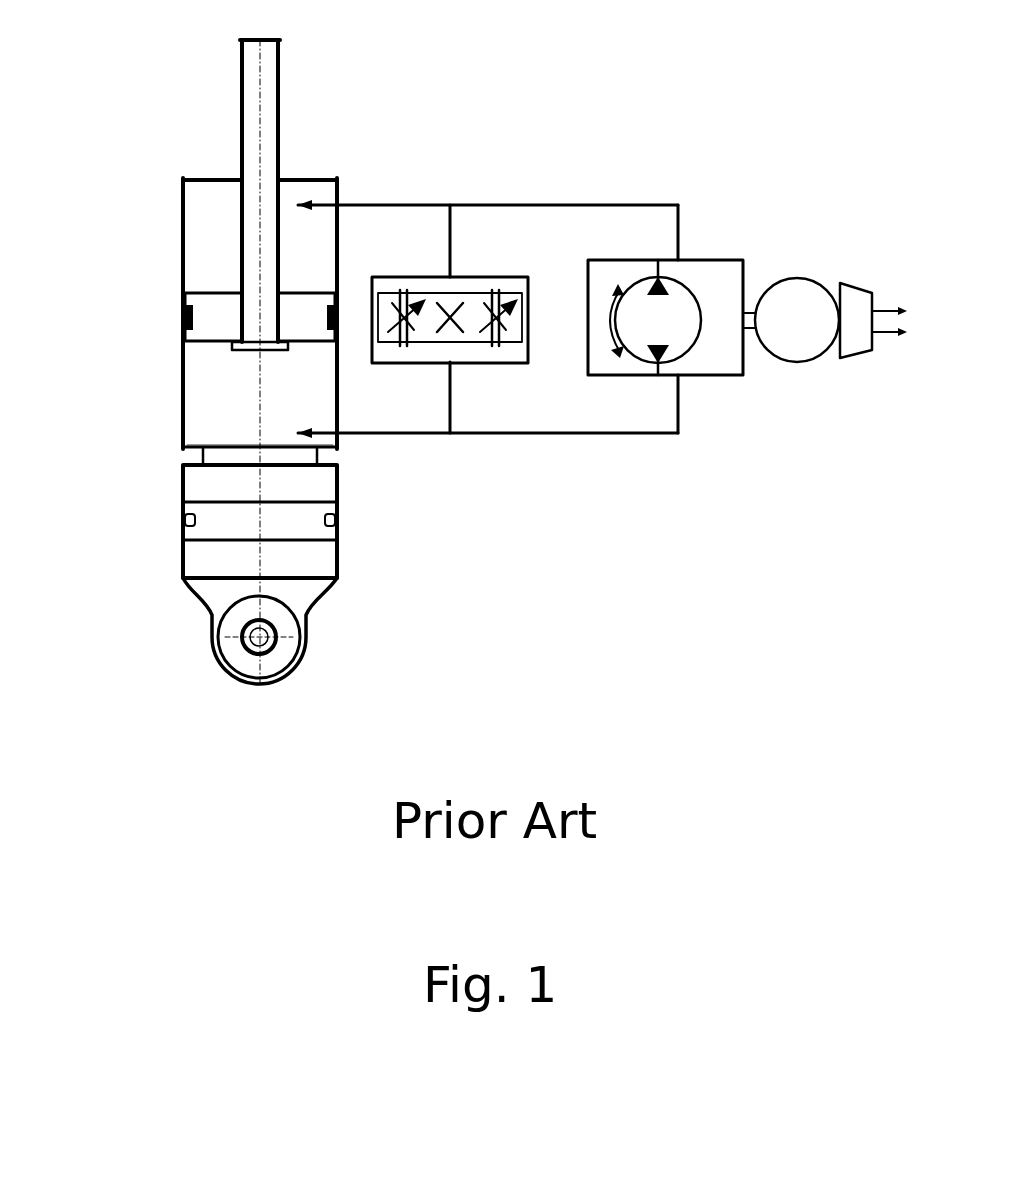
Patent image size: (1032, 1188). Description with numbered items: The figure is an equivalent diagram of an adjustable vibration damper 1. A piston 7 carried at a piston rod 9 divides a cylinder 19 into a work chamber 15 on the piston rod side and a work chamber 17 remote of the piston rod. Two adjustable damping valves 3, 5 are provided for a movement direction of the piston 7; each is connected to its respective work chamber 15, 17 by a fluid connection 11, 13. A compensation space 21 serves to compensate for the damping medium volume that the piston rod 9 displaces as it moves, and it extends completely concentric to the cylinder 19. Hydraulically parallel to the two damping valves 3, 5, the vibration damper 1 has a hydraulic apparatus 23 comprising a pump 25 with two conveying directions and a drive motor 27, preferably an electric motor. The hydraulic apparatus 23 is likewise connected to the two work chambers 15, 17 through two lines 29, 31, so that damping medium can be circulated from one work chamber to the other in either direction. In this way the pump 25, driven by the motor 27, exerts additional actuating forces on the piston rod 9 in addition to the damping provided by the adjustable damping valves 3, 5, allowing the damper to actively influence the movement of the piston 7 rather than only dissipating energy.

The adjustable vibration damper 1 is at (138, 82).
The adjustable damping valve 3 is at (403, 293).
The adjustable damping valve 5 is at (492, 362).
The piston 7 is at (213, 330).
The piston rod 9 is at (272, 77).
The fluid connection 11 is at (432, 205).
The fluid connection 13 is at (408, 435).
The work chamber 15 is at (200, 213).
The work chamber 17 is at (213, 405).
The cylinder 19 is at (172, 410).
The compensation space 21 is at (205, 480).
The hydraulic apparatus 23 is at (740, 424).
The pump 25 is at (668, 277).
The drive motor 27 is at (817, 283).
The line 29 is at (572, 205).
The line 31 is at (633, 435).